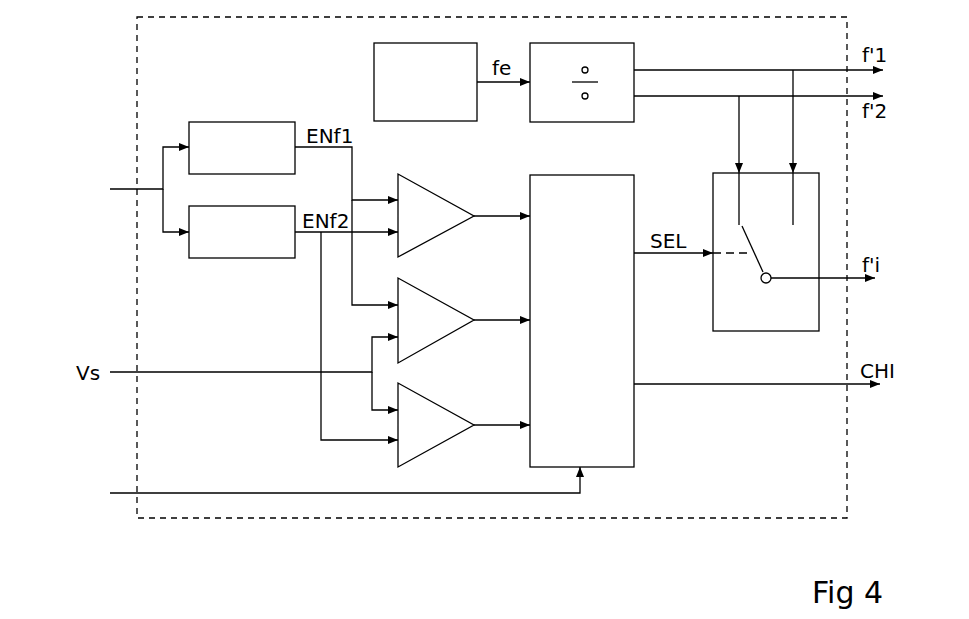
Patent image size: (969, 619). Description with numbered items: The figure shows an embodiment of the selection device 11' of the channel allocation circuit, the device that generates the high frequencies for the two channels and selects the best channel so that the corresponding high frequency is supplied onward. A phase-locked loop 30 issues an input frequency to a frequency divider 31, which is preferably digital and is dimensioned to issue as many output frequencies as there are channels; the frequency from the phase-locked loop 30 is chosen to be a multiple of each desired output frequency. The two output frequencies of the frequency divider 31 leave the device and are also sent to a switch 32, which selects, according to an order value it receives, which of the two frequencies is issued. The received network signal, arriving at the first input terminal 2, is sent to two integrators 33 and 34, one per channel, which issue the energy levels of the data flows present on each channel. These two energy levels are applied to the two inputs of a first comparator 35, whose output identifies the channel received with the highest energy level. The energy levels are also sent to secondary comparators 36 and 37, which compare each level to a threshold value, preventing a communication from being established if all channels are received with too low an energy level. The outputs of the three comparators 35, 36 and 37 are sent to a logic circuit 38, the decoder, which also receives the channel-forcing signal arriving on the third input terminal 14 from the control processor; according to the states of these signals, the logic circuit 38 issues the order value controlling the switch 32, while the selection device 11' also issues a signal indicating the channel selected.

The first input terminal 2 is at (124, 186).
The third input terminal 14 is at (114, 490).
The phase-locked loop 30 is at (374, 72).
The frequency divider 31 is at (636, 47).
The switch 32 is at (728, 172).
The integrator 33 is at (243, 121).
The integrator 34 is at (240, 259).
The first comparator 35 is at (448, 188).
The secondary comparator 36 is at (448, 293).
The secondary comparator 37 is at (448, 400).
The logic circuit 38 is at (590, 173).
The selection device 11' is at (522, 267).